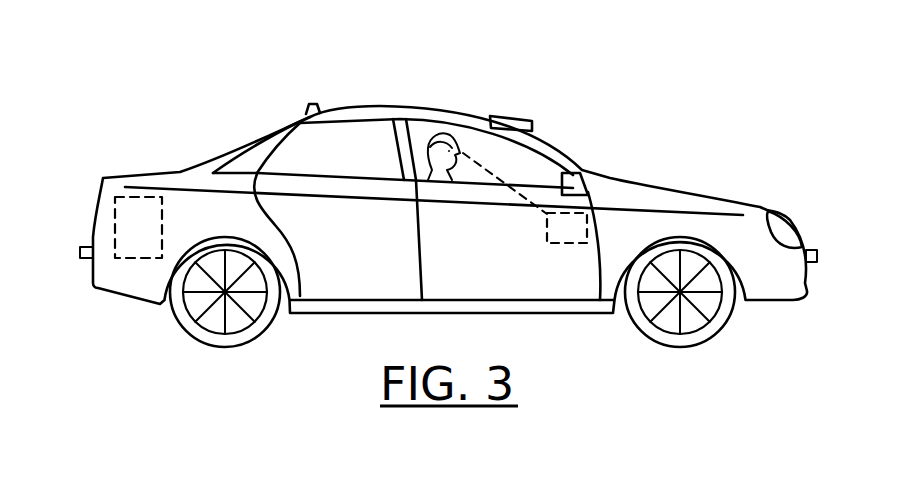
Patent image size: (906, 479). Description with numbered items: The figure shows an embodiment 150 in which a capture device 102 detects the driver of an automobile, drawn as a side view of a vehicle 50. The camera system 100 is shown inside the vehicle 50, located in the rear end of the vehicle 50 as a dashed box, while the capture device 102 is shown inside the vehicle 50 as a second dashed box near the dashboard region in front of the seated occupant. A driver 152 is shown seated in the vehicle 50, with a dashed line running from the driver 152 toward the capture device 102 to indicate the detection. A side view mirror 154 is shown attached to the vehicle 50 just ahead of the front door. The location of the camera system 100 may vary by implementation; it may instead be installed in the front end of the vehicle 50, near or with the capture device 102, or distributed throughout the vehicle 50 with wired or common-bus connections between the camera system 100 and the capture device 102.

The embodiment 150 is at (188, 30).
The vehicle 50 is at (203, 153).
The camera system 100 is at (115, 224).
The capture device 102 is at (565, 243).
The driver 152 is at (443, 133).
The side view mirror 154 is at (580, 172).